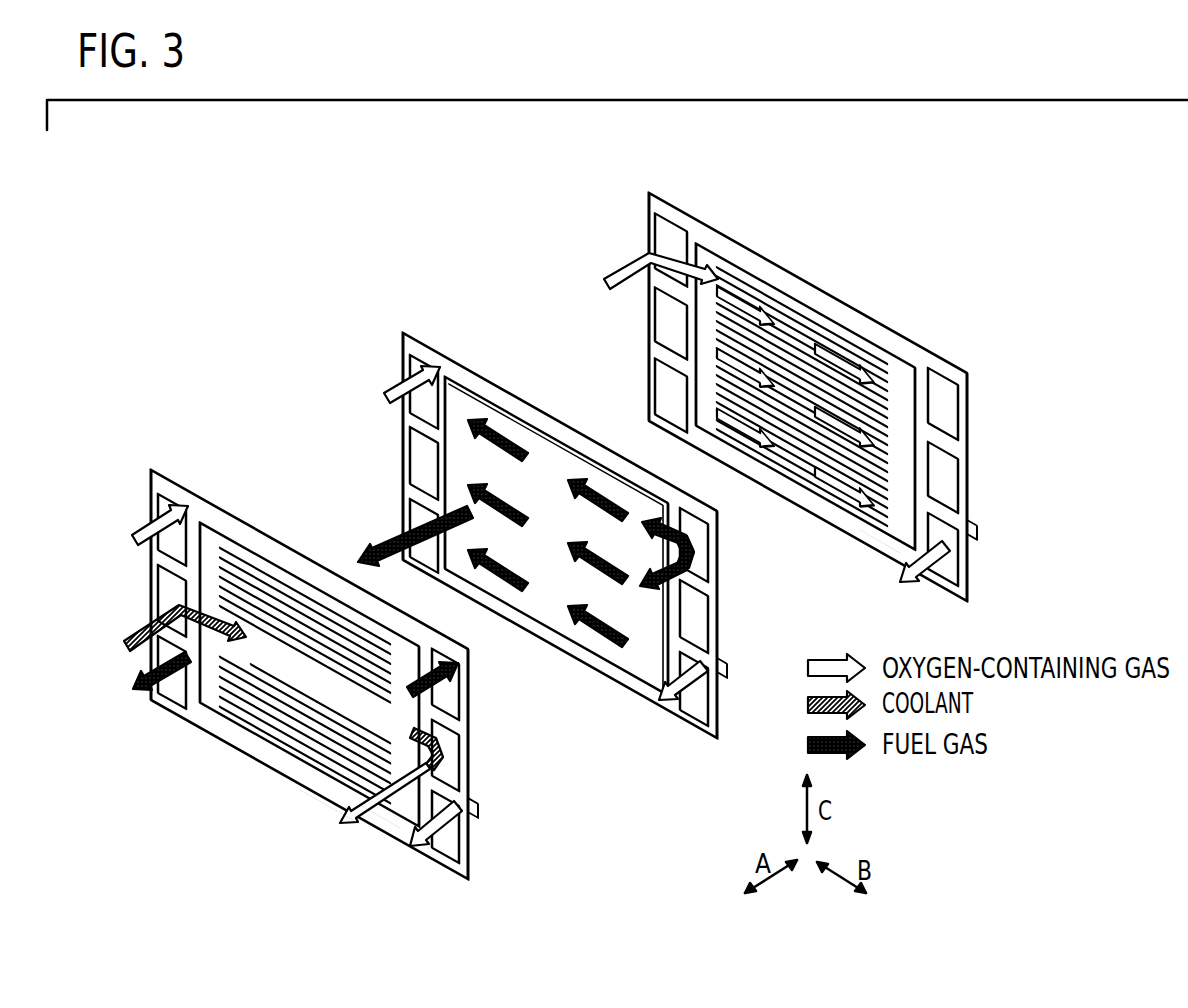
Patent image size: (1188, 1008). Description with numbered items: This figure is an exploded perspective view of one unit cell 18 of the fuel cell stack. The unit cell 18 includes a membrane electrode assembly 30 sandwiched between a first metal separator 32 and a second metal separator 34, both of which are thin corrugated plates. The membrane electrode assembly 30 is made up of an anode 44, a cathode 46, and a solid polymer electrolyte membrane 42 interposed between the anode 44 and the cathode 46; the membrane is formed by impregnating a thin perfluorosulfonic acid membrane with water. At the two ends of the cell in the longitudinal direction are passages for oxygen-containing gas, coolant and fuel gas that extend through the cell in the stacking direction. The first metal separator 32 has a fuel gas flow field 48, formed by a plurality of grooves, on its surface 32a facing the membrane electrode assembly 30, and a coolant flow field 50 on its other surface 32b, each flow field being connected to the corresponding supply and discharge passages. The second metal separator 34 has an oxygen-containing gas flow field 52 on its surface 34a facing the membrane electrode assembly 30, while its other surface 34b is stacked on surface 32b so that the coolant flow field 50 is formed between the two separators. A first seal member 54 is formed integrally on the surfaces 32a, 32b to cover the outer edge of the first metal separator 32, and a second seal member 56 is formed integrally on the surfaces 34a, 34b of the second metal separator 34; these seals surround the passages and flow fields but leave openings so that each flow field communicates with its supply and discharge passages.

The unit cell 18 is at (180, 341).
The membrane electrode assembly 30 is at (403, 333).
The first metal separator 32 is at (152, 470).
The second metal separator 34 is at (649, 193).
The solid polymer electrolyte membrane 42 is at (670, 718).
The anode 44 is at (628, 670).
The cathode 46 is at (556, 536).
The fuel gas flow field 48 is at (305, 625).
The coolant flow field 50 is at (305, 725).
The oxygen-containing gas flow field 52 is at (842, 337).
The first seal member 54 is at (309, 675).
The second seal member 56 is at (805, 397).
The surface of first metal separator 32a is at (377, 815).
The other surface of first metal separator 32b is at (328, 795).
The surface of second metal separator 34a is at (878, 548).
The other surface of second metal separator 34b is at (807, 497).